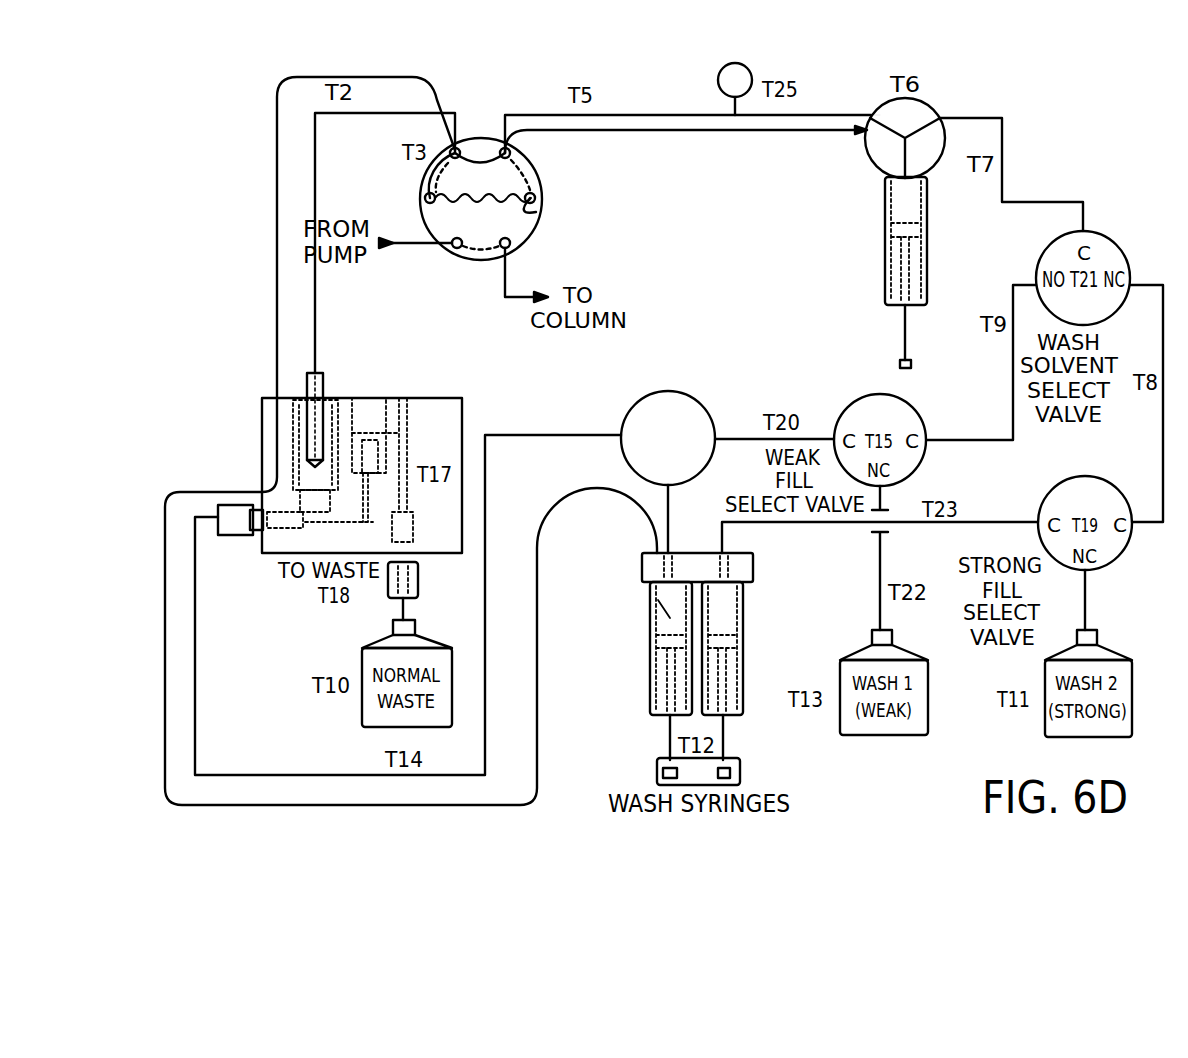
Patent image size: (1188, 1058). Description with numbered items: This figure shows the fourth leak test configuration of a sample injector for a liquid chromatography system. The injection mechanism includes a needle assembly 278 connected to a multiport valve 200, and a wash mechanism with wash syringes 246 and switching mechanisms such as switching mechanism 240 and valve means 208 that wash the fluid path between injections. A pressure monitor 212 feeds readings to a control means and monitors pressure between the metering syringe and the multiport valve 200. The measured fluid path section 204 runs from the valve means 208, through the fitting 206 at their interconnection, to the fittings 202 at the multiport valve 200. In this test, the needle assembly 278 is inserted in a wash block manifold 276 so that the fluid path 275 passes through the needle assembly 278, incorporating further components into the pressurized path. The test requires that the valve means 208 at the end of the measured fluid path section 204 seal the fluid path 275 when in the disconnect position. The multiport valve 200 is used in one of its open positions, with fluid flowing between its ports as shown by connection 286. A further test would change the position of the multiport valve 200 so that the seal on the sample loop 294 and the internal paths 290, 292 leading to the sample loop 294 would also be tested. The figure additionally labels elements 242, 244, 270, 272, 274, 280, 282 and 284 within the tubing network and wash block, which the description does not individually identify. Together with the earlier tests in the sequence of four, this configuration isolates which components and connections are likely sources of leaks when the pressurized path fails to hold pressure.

The multiport valve 200 is at (474, 195).
The fittings 202 is at (510, 153).
The fluid path section 204 is at (660, 115).
The fitting 206 is at (870, 108).
The valve means 208 is at (922, 102).
The pressure monitor 212 is at (748, 72).
The switching mechanism 240 is at (700, 393).
The tubing 242 is at (668, 486).
The manifold 244 is at (665, 553).
The wash syringe 246 is at (650, 672).
The tubing 270 is at (520, 435).
The fitting 272 is at (218, 523).
The fitting 274 is at (256, 531).
The fluid path 275 is at (277, 233).
The wash block manifold 276 is at (262, 421).
The needle assembly 278 is at (325, 378).
The needle seat 280 is at (330, 400).
The tubing 282 is at (316, 273).
The valve port 284 is at (455, 150).
The connection 286 is at (428, 196).
The internal path 290 is at (433, 175).
The internal path 292 is at (535, 172).
The sample loop 294 is at (536, 213).